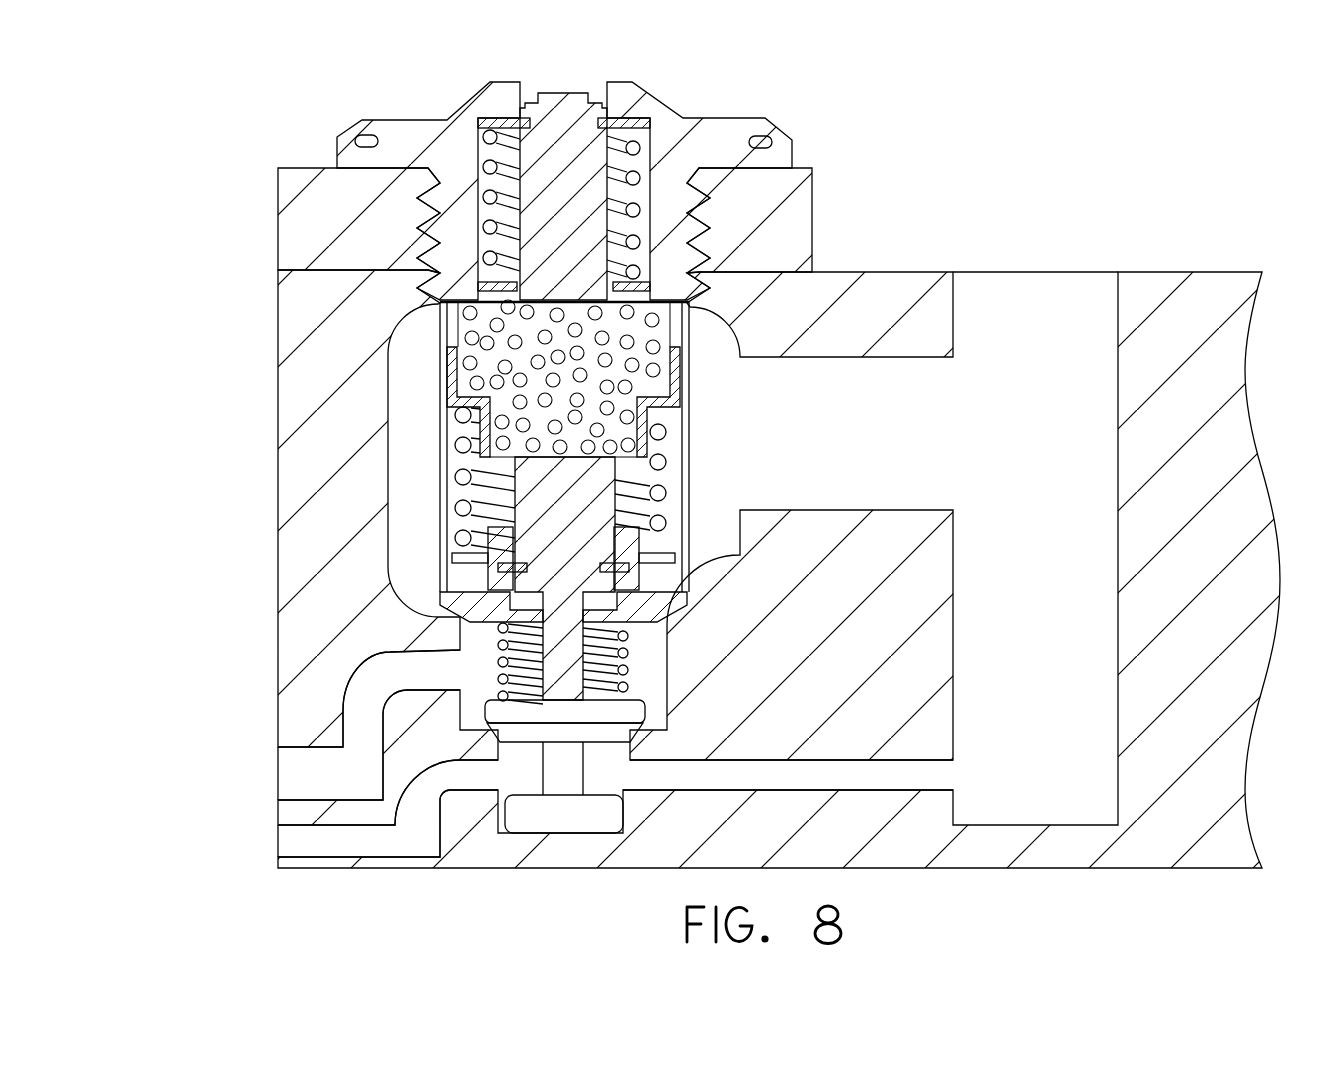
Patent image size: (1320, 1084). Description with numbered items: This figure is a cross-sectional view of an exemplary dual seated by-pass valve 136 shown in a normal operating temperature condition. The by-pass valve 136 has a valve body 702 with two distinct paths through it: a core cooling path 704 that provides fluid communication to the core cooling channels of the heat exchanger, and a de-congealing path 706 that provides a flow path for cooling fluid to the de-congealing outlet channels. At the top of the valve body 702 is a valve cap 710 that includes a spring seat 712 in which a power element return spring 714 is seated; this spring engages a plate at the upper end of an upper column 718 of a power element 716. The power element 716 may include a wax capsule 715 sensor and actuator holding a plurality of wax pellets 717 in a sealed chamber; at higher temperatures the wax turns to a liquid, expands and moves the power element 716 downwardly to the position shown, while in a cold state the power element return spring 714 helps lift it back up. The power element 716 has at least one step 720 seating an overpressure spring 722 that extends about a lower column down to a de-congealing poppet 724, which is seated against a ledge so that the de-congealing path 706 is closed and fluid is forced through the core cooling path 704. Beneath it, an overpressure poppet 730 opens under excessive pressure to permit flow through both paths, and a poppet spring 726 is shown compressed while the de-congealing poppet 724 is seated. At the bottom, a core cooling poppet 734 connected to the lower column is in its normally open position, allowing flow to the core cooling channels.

The by-pass valve 136 is at (1003, 164).
The valve body 702 is at (1134, 272).
The core cooling path 704 is at (256, 851).
The de-congealing path 706 is at (262, 762).
The valve cap 710 is at (680, 113).
The spring seat 712 is at (497, 140).
The power element return spring 714 is at (510, 197).
The wax capsule 715 is at (703, 292).
The power element 716 is at (440, 321).
The wax pellets 717 is at (659, 380).
The upper column 718 is at (556, 118).
The step 720 is at (447, 407).
The overpressure spring 722 is at (667, 460).
The de-congealing poppet 724 is at (665, 618).
The poppet spring 726 is at (603, 650).
The overpressure poppet 730 is at (513, 714).
The core cooling poppet 734 is at (581, 823).